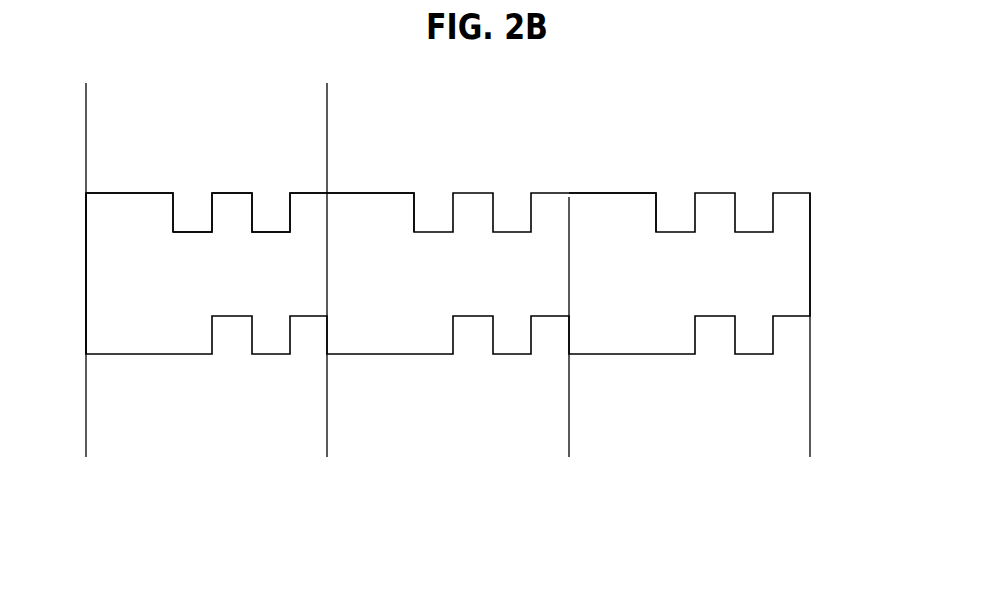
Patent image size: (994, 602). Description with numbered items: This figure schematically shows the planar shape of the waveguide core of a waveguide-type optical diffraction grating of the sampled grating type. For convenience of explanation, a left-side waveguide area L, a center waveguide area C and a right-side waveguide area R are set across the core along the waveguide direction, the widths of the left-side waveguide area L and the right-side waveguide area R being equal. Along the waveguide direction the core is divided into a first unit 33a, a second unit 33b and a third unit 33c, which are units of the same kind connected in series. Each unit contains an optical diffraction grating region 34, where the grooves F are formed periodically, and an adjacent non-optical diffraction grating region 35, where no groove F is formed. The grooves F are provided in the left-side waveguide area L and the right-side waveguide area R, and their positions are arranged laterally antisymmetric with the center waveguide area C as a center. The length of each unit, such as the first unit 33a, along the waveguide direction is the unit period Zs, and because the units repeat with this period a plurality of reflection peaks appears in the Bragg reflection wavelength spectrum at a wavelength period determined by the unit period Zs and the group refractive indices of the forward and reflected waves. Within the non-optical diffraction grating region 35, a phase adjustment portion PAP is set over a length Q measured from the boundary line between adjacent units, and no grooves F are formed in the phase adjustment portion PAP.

The first unit 33a is at (327, 449).
The second unit 33b is at (327, 449).
The third unit 33c is at (810, 449).
The optical diffraction grating region 34 is at (173, 125).
The non-optical diffraction grating region 35 is at (173, 193).
The unit period Zs is at (86, 92).
The phase adjustment portion PAP is at (327, 120).
The length Q is at (154, 193).
The groove F is at (193, 208).
The left-side waveguide area L is at (777, 232).
The center waveguide area C is at (777, 316).
The right-side waveguide area R is at (777, 354).